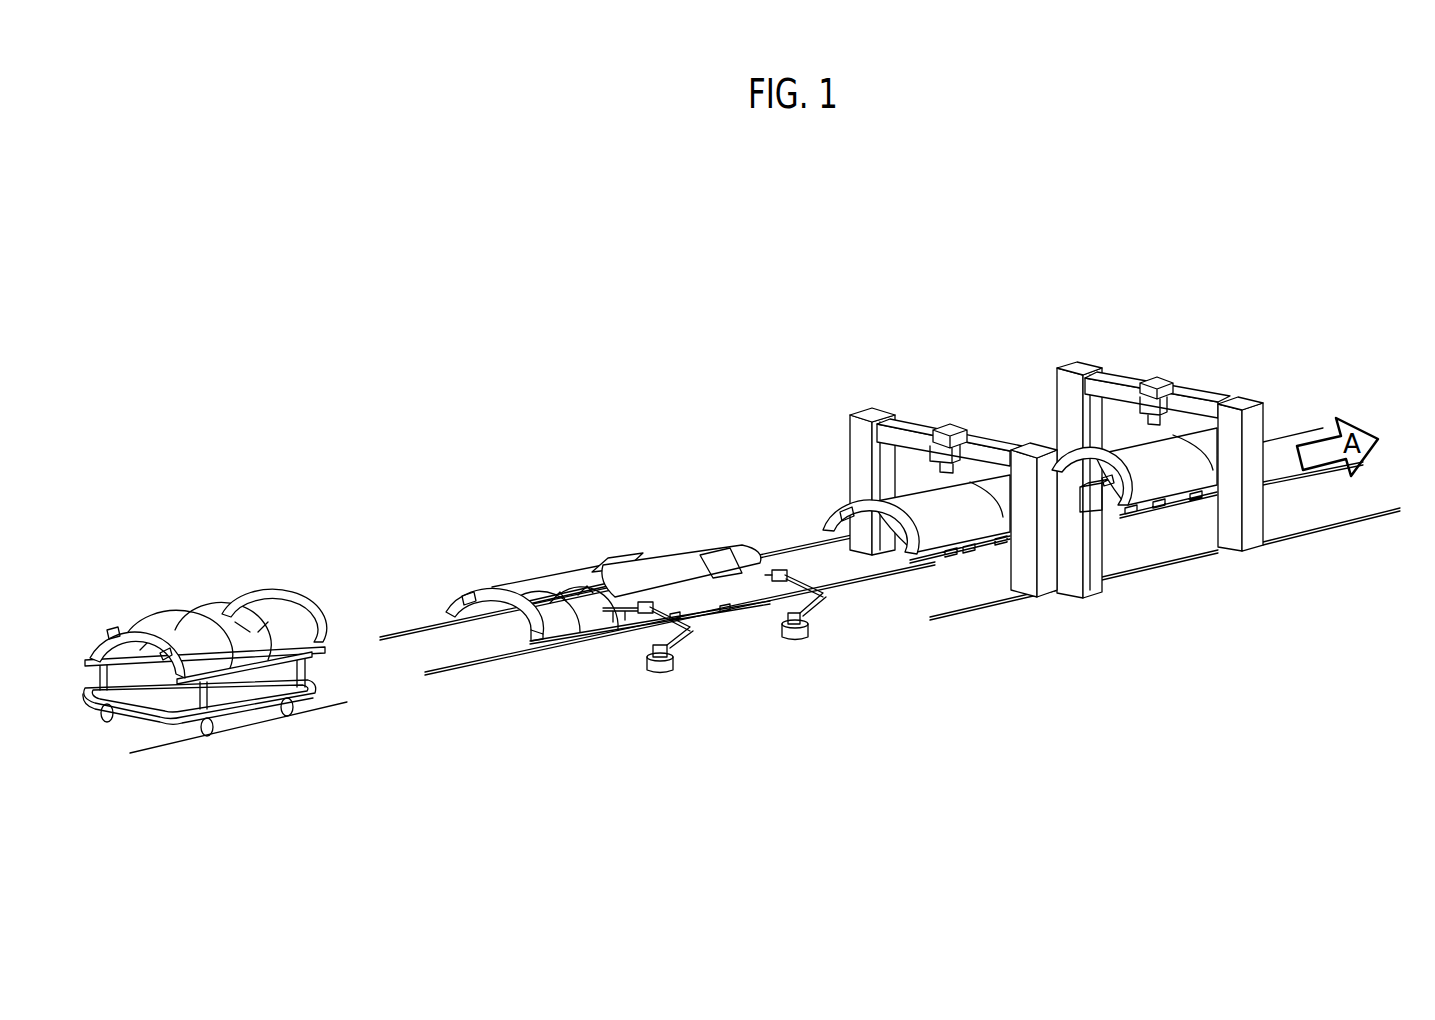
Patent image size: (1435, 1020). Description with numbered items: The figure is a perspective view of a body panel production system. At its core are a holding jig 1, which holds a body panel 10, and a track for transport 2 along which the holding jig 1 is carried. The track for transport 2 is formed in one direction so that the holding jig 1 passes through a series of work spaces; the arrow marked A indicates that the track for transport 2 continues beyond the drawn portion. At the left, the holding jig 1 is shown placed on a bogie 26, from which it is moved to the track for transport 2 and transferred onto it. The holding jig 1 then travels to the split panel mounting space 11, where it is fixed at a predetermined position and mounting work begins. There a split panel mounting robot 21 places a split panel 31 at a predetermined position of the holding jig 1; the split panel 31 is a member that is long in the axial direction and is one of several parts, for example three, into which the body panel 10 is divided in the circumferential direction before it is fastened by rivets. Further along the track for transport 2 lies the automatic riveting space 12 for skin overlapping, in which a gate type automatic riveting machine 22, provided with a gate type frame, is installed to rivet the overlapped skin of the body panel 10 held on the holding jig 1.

The holding jig 1 is at (291, 600).
The track for transport 2 is at (410, 634).
The body panel 10 is at (949, 535).
The split panel mounting space 11 is at (583, 466).
The automatic riveting space 12 is at (939, 356).
The split panel mounting robot 21 is at (678, 648).
The gate type automatic riveting machine 22 is at (928, 450).
The bogie 26 is at (132, 714).
The split panel 31 is at (540, 575).